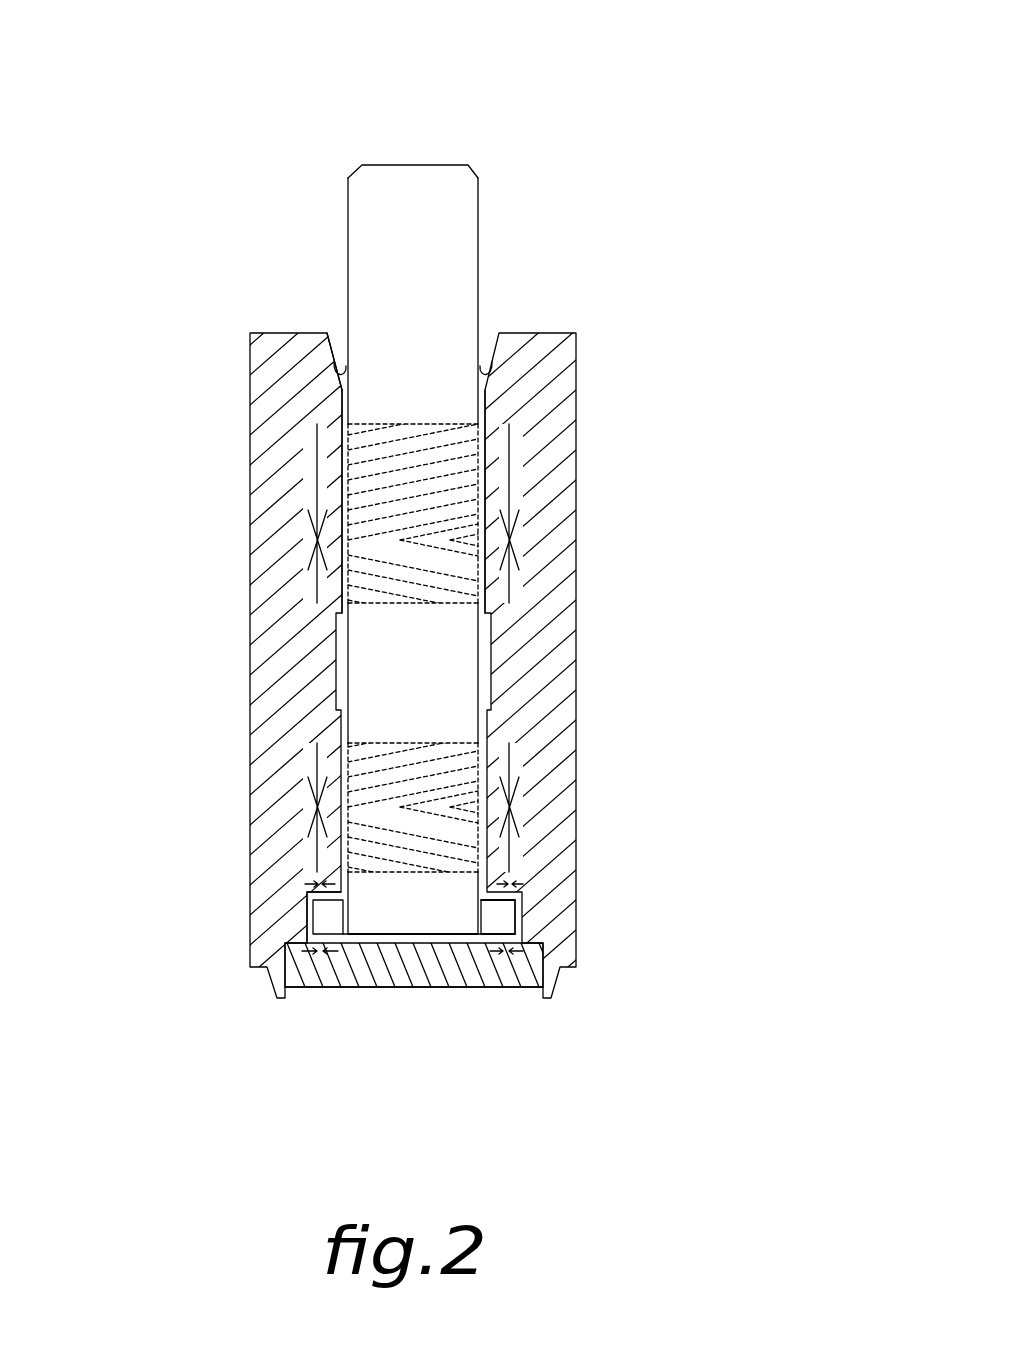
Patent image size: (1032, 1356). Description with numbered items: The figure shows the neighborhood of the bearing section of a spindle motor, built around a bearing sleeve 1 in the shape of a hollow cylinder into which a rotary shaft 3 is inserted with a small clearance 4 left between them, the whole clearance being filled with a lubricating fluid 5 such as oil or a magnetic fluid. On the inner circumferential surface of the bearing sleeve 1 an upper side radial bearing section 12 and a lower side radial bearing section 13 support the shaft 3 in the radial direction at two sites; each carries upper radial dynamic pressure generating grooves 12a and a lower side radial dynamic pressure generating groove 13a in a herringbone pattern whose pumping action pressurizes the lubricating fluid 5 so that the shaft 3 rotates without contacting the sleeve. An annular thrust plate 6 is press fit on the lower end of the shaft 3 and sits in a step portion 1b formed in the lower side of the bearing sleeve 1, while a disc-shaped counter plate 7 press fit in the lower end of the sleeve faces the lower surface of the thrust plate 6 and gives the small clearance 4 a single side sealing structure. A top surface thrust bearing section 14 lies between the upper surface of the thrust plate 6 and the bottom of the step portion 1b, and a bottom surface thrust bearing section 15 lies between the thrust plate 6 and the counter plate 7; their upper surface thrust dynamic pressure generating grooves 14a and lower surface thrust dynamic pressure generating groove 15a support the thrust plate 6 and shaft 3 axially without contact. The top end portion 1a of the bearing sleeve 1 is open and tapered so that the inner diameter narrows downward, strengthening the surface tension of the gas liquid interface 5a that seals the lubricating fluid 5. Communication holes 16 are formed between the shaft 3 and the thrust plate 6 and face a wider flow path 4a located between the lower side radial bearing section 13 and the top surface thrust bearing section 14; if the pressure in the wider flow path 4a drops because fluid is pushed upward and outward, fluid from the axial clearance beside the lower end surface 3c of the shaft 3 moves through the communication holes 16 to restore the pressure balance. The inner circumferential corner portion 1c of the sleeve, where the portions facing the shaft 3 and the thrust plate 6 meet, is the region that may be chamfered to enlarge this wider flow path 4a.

The bearing sleeve 1 is at (238, 310).
The top end portion 1a is at (330, 362).
The step portion 1b is at (305, 890).
The inner circumferential corner portion 1c is at (337, 880).
The shaft 3 is at (452, 148).
The lower end surface 3c is at (385, 935).
The small clearance 4 is at (390, 940).
The wider flow path 4a is at (486, 883).
The lubricating fluid 5 is at (345, 645).
The gas liquid interface 5a is at (340, 358).
The thrust plate 6 is at (487, 920).
The counter plate 7 is at (353, 975).
The upper side radial bearing section 12 is at (437, 423).
The upper radial dynamic pressure generating grooves 12a is at (448, 463).
The lower side radial bearing section 13 is at (435, 742).
The lower side radial dynamic pressure generating groove 13a is at (457, 780).
The top surface thrust bearing section 14 is at (512, 903).
The upper surface thrust dynamic pressure generating grooves 14a is at (636, 876).
The bottom surface thrust bearing section 15 is at (512, 927).
The lower surface thrust dynamic pressure generating groove 15a is at (641, 953).
The communication holes 16 is at (343, 913).